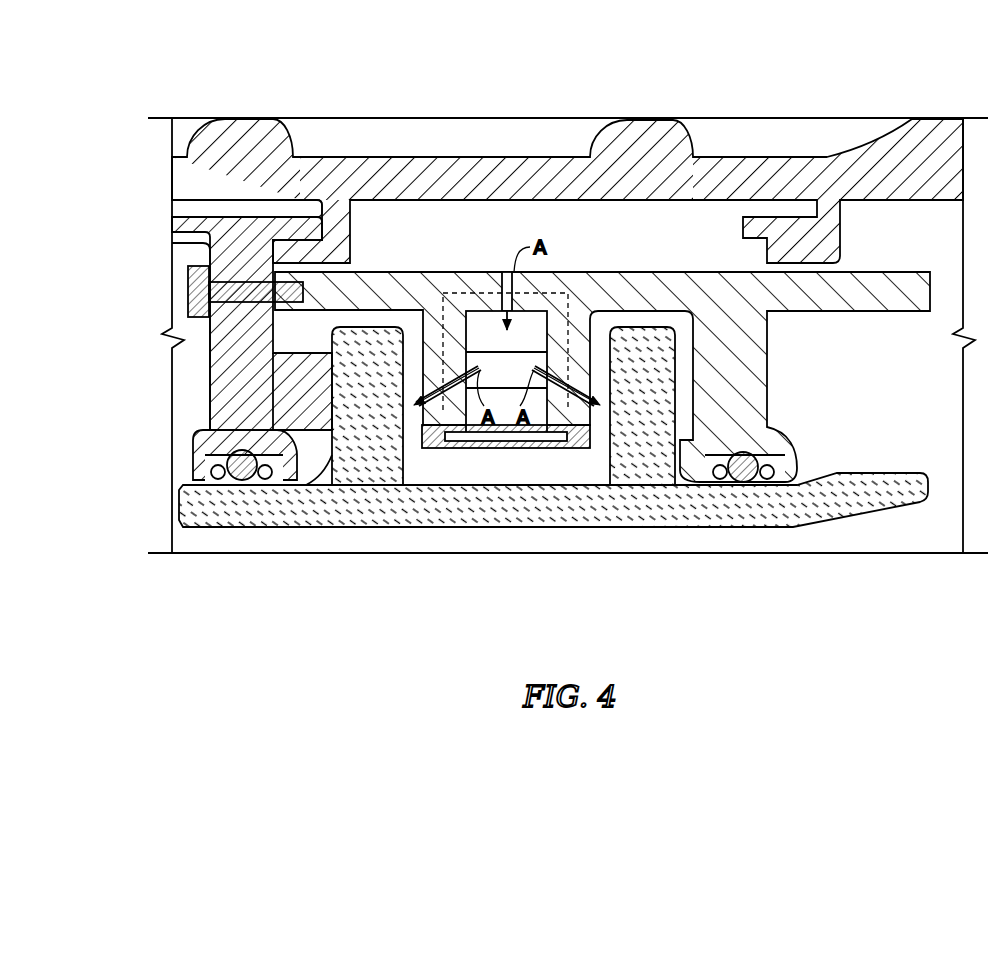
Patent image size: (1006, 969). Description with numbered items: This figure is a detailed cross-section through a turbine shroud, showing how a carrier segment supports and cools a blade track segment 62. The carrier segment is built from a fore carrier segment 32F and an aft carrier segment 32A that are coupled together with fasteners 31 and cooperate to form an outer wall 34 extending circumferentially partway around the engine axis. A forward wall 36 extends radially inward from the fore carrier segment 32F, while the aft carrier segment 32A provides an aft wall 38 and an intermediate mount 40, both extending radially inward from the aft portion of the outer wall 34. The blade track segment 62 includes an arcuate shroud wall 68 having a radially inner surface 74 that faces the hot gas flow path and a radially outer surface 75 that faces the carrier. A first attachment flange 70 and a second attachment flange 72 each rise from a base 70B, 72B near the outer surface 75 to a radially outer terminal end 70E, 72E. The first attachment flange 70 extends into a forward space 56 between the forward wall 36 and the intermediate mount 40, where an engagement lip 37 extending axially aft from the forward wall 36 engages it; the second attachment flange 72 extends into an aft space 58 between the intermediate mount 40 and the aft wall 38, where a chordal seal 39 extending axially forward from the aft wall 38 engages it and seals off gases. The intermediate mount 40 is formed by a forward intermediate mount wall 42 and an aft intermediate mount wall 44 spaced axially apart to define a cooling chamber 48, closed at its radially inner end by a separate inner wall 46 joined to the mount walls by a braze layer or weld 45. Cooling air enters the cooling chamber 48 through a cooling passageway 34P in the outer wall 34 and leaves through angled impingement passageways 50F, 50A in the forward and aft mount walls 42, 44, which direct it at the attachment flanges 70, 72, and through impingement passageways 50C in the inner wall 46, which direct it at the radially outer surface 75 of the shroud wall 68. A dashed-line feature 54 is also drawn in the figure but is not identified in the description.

The fasteners 31 is at (186, 287).
The aft carrier segment 32A is at (724, 195).
The fore carrier segment 32F is at (200, 206).
The outer wall 34 is at (685, 258).
The cooling passageway 34P is at (507, 262).
The forward wall 36 is at (202, 395).
The engagement lip 37 is at (270, 432).
The aft wall 38 is at (775, 333).
The chordal seal 39 is at (690, 455).
The intermediate mount 40 is at (633, 212).
The forward intermediate mount wall 42 is at (410, 318).
The aft intermediate mount wall 44 is at (597, 318).
The braze layer or weld 45 is at (385, 527).
The inner wall 46 is at (490, 370).
The cooling chamber 48 is at (516, 342).
The impingement passageways 50A is at (577, 416).
The impingement passageways 50C is at (483, 527).
The impingement passageways 50F is at (437, 416).
The flow path 54 is at (478, 282).
The forward space 56 is at (310, 312).
The aft space 58 is at (684, 310).
The blade track segment 62 is at (553, 512).
The shroud wall 68 is at (413, 549).
The first attachment flange 70 is at (306, 458).
The base 70B is at (363, 333).
The radially outer terminal end 70E is at (343, 527).
The second attachment flange 72 is at (763, 527).
The base 72B is at (588, 440).
The radially outer terminal end 72E is at (650, 335).
The radially inner surface 74 is at (597, 470).
The radially outer surface 75 is at (488, 455).